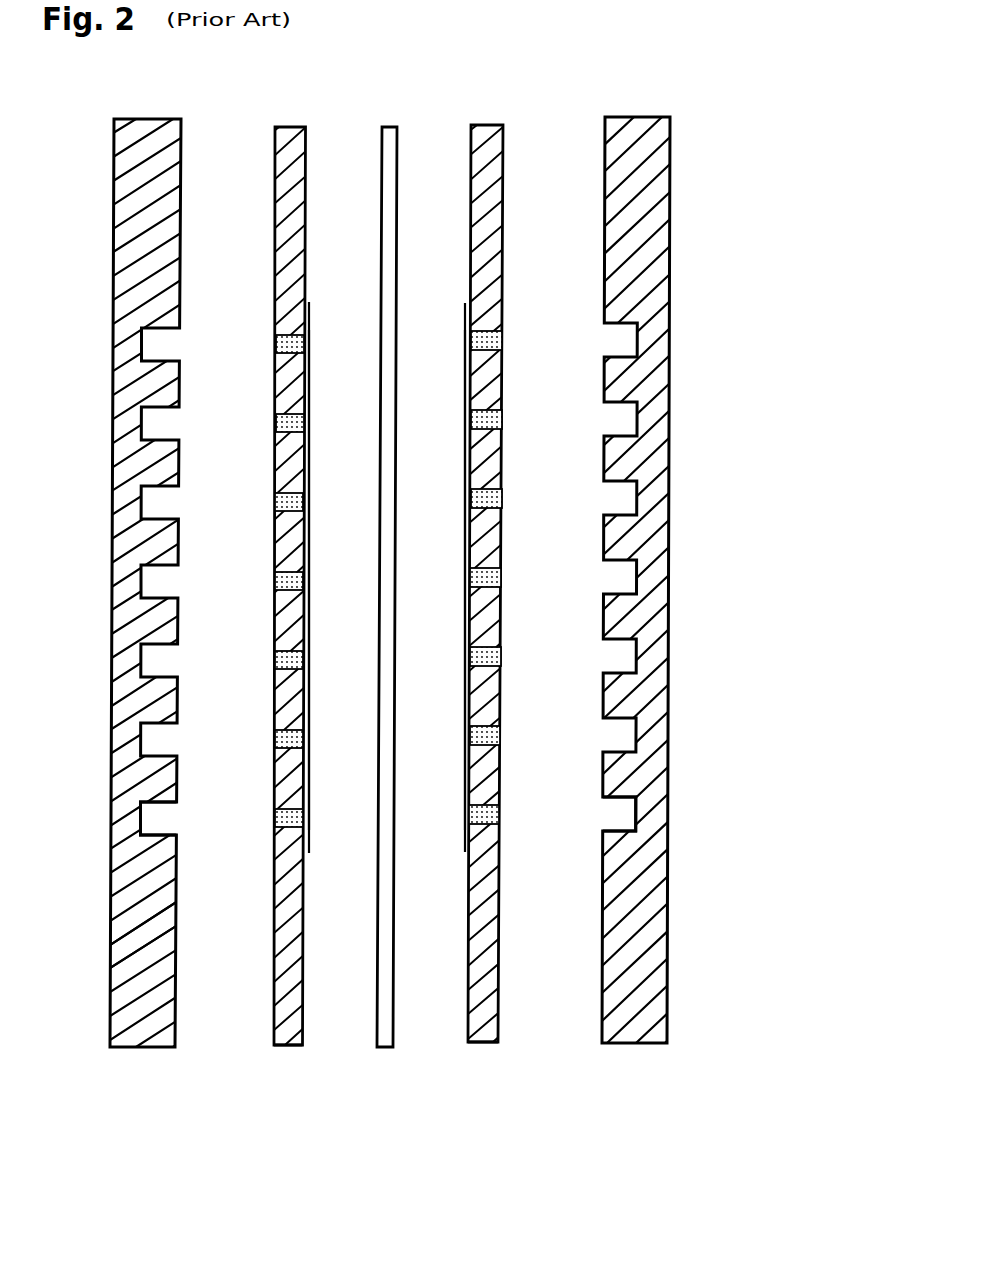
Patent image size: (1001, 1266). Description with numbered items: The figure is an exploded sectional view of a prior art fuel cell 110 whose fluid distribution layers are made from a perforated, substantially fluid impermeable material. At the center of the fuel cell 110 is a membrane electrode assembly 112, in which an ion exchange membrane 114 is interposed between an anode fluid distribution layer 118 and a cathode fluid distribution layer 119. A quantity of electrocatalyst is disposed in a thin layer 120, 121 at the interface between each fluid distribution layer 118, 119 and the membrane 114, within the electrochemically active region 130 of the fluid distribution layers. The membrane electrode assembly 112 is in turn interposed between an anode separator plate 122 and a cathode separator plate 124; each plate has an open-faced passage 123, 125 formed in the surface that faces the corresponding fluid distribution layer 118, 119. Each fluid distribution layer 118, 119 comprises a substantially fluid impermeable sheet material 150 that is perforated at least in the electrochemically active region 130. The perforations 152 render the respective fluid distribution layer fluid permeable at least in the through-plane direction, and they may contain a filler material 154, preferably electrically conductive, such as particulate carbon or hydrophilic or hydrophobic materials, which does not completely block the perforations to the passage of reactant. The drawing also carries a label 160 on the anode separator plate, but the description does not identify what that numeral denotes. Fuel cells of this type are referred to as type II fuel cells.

The fuel cell 110 is at (693, 100).
The membrane electrode assembly 112 is at (537, 1098).
The ion exchange membrane 114 is at (394, 1047).
The anode fluid distribution layer 118 is at (302, 112).
The cathode fluid distribution layer 119 is at (492, 106).
The electrocatalyst layer 120 is at (311, 302).
The electrocatalyst layer 121 is at (467, 813).
The anode separator plate 122 is at (125, 877).
The open-faced passage 123 is at (155, 820).
The cathode separator plate 124 is at (648, 879).
The open-faced passage 125 is at (623, 812).
The electrochemically active region 130 is at (256, 294).
The substantially fluid impermeable sheet material 150 is at (287, 1047).
The perforations 152 is at (276, 735).
The filler material 154 is at (487, 496).
The plate body 160 is at (127, 958).